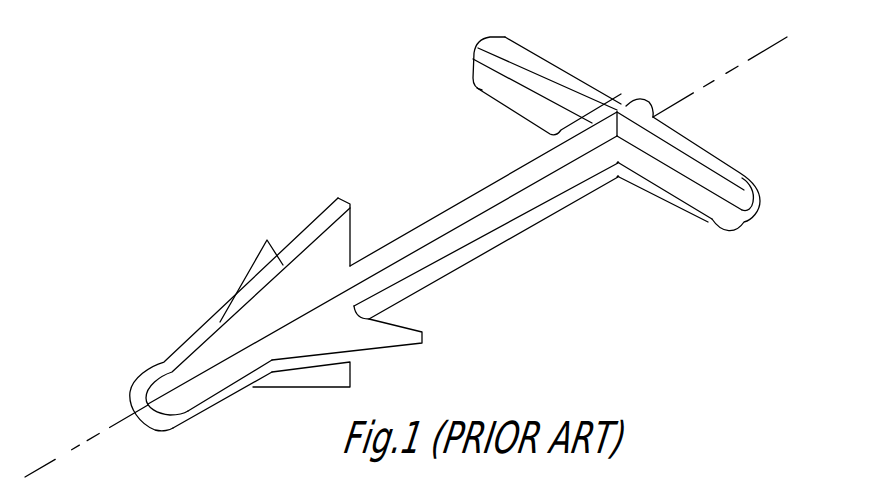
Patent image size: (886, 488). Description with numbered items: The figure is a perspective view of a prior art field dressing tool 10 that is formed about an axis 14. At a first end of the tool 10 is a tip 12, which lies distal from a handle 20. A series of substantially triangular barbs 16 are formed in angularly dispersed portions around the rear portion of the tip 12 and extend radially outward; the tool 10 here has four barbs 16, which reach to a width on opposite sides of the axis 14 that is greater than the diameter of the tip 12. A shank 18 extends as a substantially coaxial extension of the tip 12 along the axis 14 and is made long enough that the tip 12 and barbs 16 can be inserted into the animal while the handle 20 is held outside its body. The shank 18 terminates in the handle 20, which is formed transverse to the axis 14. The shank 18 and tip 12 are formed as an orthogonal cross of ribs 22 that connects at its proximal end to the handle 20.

The field dressing tool 10 is at (267, 134).
The tip 12 is at (213, 317).
The axis 14 is at (74, 451).
The barbs 16 is at (332, 207).
The shank 18 is at (517, 207).
The handle 20 is at (560, 64).
The ribs 22 is at (497, 193).